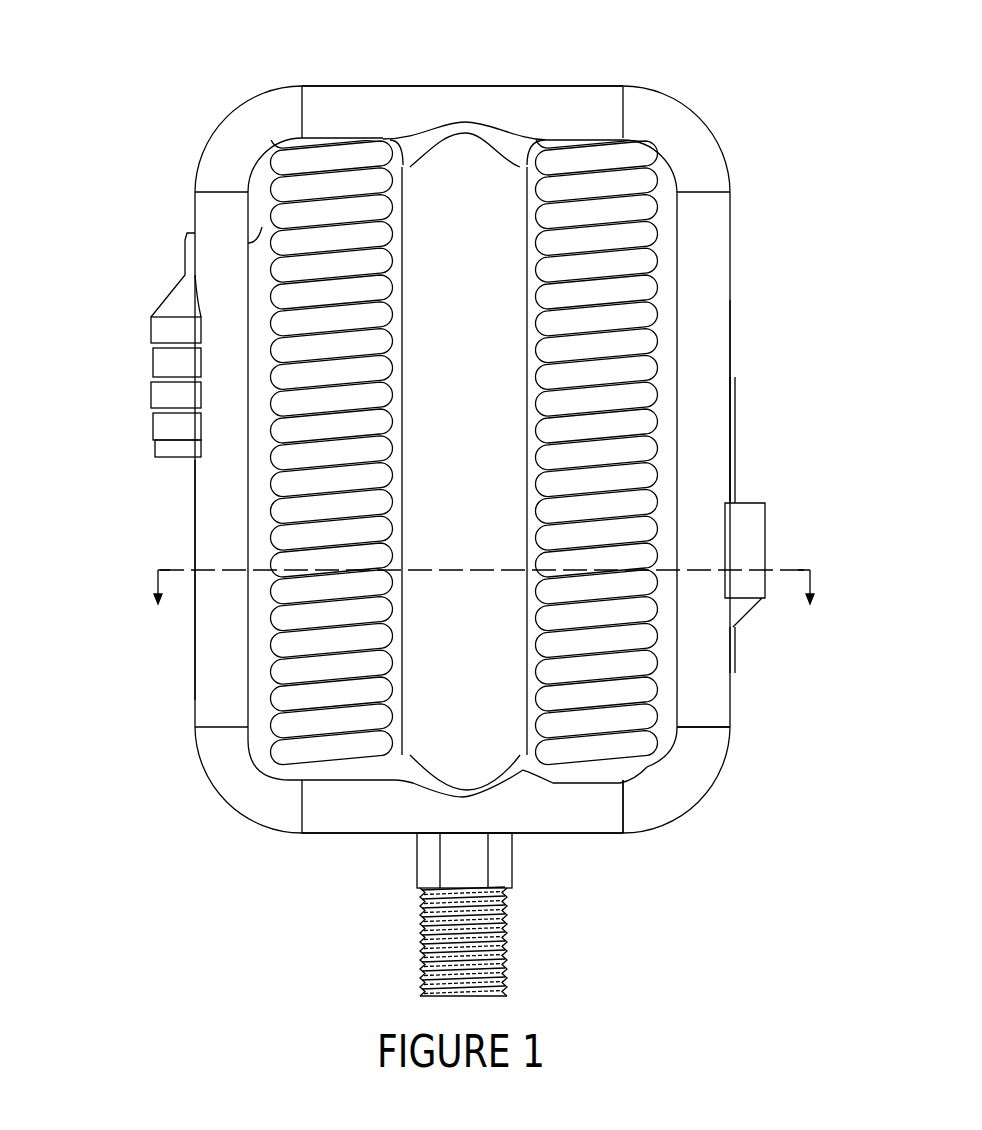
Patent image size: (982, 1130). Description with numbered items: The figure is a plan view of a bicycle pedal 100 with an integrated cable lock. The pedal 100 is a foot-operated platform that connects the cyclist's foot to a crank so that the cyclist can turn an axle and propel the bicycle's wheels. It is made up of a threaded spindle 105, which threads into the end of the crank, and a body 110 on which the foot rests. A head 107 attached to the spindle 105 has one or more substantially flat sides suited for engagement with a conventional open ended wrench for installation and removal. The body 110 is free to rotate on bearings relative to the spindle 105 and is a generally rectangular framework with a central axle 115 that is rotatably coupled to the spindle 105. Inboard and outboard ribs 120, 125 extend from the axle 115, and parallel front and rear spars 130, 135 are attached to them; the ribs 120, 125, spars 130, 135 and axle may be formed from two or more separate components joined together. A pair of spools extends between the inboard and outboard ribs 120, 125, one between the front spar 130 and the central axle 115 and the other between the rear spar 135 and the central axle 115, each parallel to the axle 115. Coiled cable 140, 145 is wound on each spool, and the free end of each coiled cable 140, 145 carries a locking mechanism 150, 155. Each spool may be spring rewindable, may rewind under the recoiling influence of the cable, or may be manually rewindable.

The bicycle pedal 100 is at (243, 825).
The threaded spindle 105 is at (508, 955).
The head 107 is at (502, 863).
The body 110 is at (727, 750).
The central axle 115 is at (468, 177).
The inboard rib 120 is at (375, 815).
The outboard rib 125 is at (378, 103).
The front spar 130 is at (210, 538).
The rear spar 135 is at (715, 288).
The coiled cable 140 is at (277, 693).
The coiled cable 145 is at (600, 718).
The locking mechanism 150 is at (162, 392).
The locking mechanism 155 is at (752, 552).